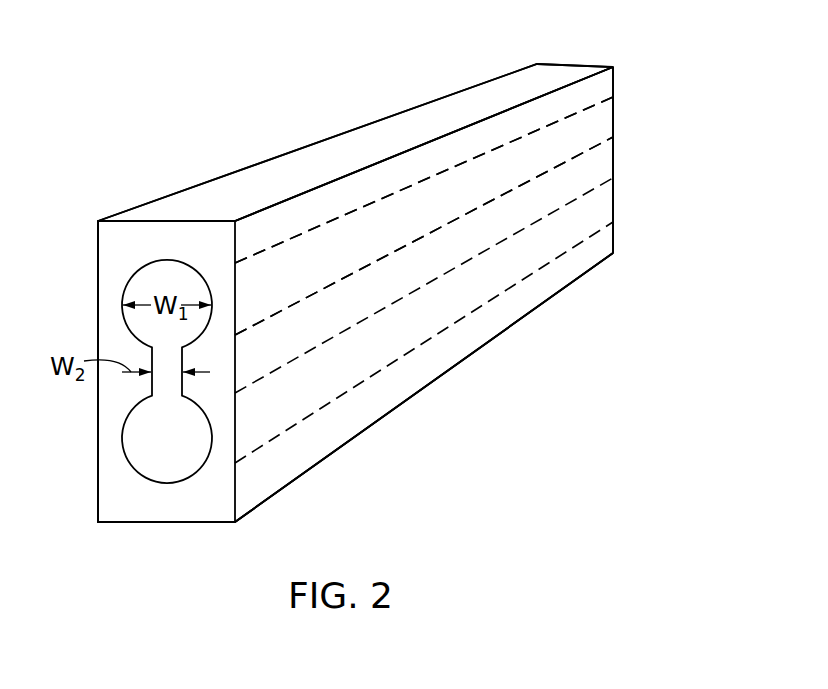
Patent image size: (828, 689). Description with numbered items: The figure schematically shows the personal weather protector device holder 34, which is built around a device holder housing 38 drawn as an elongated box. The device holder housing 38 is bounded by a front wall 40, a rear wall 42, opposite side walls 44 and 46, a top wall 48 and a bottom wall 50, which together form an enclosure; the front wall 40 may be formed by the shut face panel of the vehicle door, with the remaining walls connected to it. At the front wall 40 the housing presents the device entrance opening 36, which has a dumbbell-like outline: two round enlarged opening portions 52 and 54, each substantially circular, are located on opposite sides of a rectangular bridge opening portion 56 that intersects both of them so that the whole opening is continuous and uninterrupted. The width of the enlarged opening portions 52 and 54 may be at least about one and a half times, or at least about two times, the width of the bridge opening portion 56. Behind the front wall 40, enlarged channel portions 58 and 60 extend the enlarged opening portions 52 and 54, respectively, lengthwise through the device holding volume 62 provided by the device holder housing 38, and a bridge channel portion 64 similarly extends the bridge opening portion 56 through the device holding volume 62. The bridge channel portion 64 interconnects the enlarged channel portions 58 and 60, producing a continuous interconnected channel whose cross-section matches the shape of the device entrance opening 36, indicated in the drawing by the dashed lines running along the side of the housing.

The personal weather protector device holder 34 is at (621, 64).
The device entrance opening 36 is at (117, 238).
The device holder housing 38 is at (237, 152).
The front wall 40 is at (102, 488).
The rear wall 42 is at (613, 204).
The side wall 44 is at (488, 332).
The side wall 46 is at (98, 302).
The top wall 48 is at (477, 102).
The bottom wall 50 is at (385, 420).
The enlarged opening portion 52 is at (218, 262).
The enlarged opening portion 54 is at (215, 488).
The bridge opening portion 56 is at (215, 340).
The enlarged channel portion 58 is at (522, 160).
The enlarged channel portion 60 is at (543, 242).
The device holding volume 62 is at (355, 183).
The bridge channel portion 64 is at (597, 128).